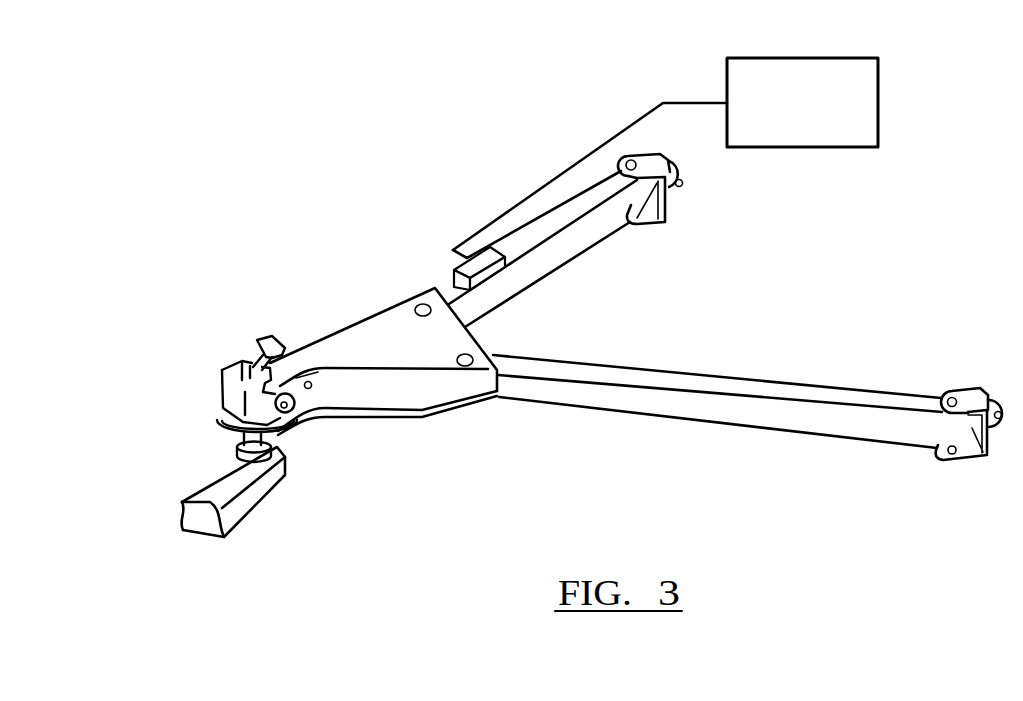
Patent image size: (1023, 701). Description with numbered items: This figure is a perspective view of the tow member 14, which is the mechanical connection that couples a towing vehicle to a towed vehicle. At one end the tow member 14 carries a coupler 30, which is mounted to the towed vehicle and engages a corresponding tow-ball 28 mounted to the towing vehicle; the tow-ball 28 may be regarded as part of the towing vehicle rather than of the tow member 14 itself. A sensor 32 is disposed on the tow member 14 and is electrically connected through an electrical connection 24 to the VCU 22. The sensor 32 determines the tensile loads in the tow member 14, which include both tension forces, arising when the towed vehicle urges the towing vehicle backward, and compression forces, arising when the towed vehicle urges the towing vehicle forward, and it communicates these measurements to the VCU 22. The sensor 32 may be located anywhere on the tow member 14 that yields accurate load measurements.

The tow member 14 is at (288, 173).
The VCU 22 is at (878, 106).
The electrical connection 24 is at (590, 153).
The tow-ball 28 is at (242, 444).
The coupler 30 is at (238, 366).
The sensor 32 is at (453, 272).